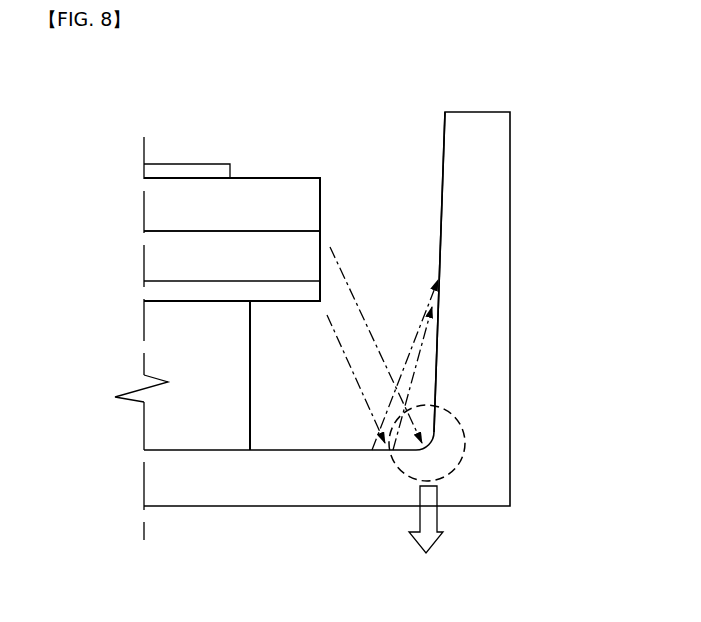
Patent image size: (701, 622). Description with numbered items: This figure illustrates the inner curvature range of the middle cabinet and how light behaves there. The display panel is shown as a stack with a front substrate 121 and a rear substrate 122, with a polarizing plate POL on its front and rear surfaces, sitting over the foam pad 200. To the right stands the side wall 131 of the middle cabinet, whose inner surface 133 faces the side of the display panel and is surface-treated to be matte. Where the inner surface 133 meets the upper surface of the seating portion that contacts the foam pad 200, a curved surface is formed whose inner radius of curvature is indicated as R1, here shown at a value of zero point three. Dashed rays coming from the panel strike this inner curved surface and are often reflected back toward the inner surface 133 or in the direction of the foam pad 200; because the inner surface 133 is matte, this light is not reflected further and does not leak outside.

The polarizing plate POL is at (152, 171).
The front substrate 121 is at (152, 213).
The rear substrate 122 is at (155, 255).
The foam pad 200 is at (158, 333).
The side wall 131 is at (500, 162).
The inner surface 133 is at (440, 137).
The reflected light direction R1 is at (426, 533).